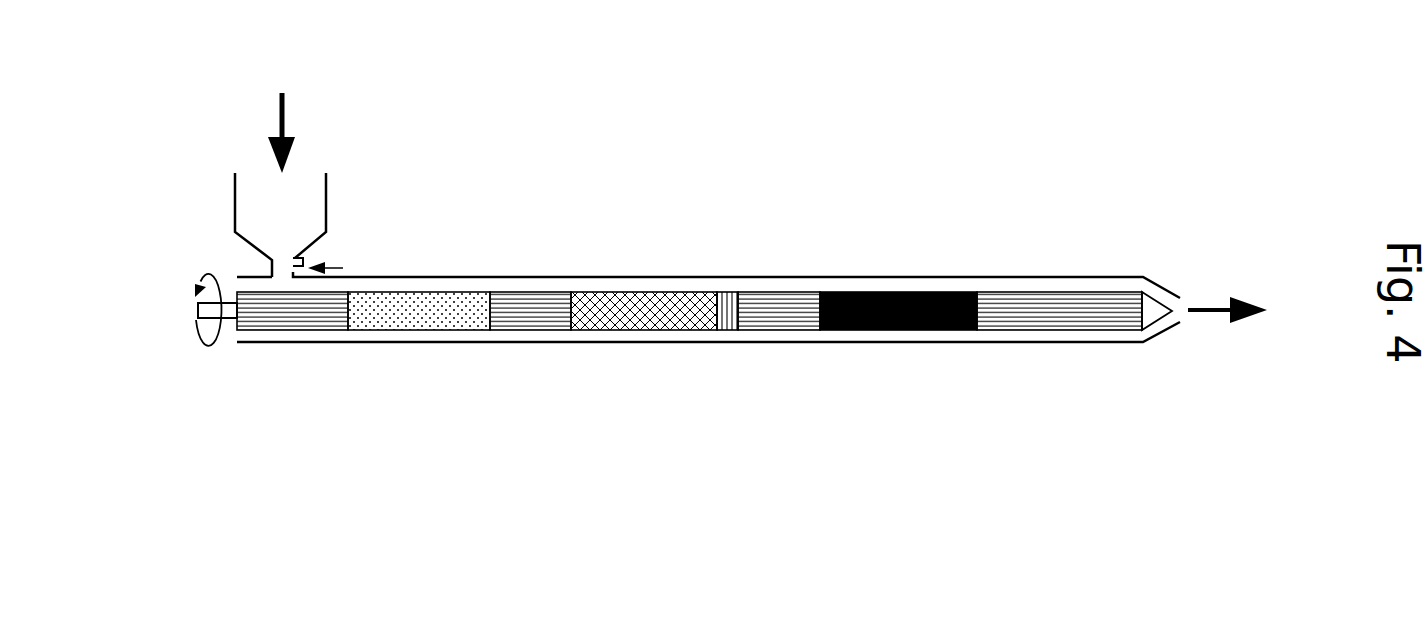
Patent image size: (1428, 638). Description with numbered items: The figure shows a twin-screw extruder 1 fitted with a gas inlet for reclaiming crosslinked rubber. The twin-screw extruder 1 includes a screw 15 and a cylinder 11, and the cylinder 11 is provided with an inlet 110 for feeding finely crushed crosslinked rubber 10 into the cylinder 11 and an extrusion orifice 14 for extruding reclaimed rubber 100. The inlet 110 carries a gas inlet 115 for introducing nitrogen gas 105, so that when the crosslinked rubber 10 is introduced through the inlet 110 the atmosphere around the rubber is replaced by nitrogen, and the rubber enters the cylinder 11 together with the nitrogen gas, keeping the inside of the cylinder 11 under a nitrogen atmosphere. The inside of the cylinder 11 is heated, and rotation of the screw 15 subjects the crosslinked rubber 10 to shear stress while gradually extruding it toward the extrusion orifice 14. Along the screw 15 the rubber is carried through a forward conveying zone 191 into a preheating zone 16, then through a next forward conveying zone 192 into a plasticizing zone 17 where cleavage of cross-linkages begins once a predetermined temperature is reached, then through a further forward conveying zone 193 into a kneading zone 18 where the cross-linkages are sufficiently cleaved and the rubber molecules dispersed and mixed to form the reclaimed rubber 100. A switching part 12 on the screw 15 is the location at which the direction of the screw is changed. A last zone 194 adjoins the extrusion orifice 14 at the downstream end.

The twin-screw extruder 1 is at (423, 503).
The crosslinked rubber 10 is at (282, 113).
The cylinder 11 is at (652, 343).
The switching part 12 is at (731, 333).
The extrusion orifice 14 is at (1161, 323).
The screw 15 is at (277, 335).
The preheating zone 16 is at (412, 333).
The plasticizing zone 17 is at (652, 292).
The kneading zone 18 is at (889, 333).
The reclaimed rubber 100 is at (1210, 305).
The nitrogen gas 105 is at (343, 268).
The inlet 110 is at (262, 266).
The gas inlet 115 is at (302, 257).
The forward conveying zone 191 is at (323, 333).
The forward conveying zone 192 is at (531, 333).
The forward conveying zone 193 is at (795, 333).
The fourth spacer section 194 is at (1043, 333).